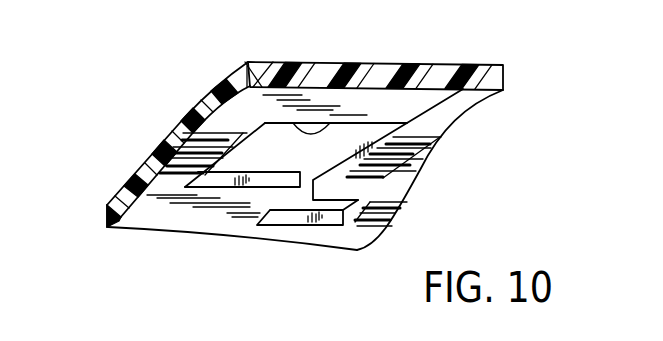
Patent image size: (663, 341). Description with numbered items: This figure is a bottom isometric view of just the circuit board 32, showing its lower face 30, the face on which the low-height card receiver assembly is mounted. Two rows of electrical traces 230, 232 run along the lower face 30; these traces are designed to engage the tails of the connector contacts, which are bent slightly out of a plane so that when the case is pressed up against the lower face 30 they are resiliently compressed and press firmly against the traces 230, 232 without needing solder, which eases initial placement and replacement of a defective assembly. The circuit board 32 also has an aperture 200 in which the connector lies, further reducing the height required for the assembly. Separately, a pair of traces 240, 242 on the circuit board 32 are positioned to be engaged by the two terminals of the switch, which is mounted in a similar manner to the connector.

The lower face 30 is at (145, 217).
The circuit board 32 is at (100, 218).
The aperture 200 is at (332, 124).
The electrical traces 230 is at (280, 63).
The electrical traces 232 is at (477, 62).
The trace 240 is at (357, 226).
The trace 242 is at (383, 203).